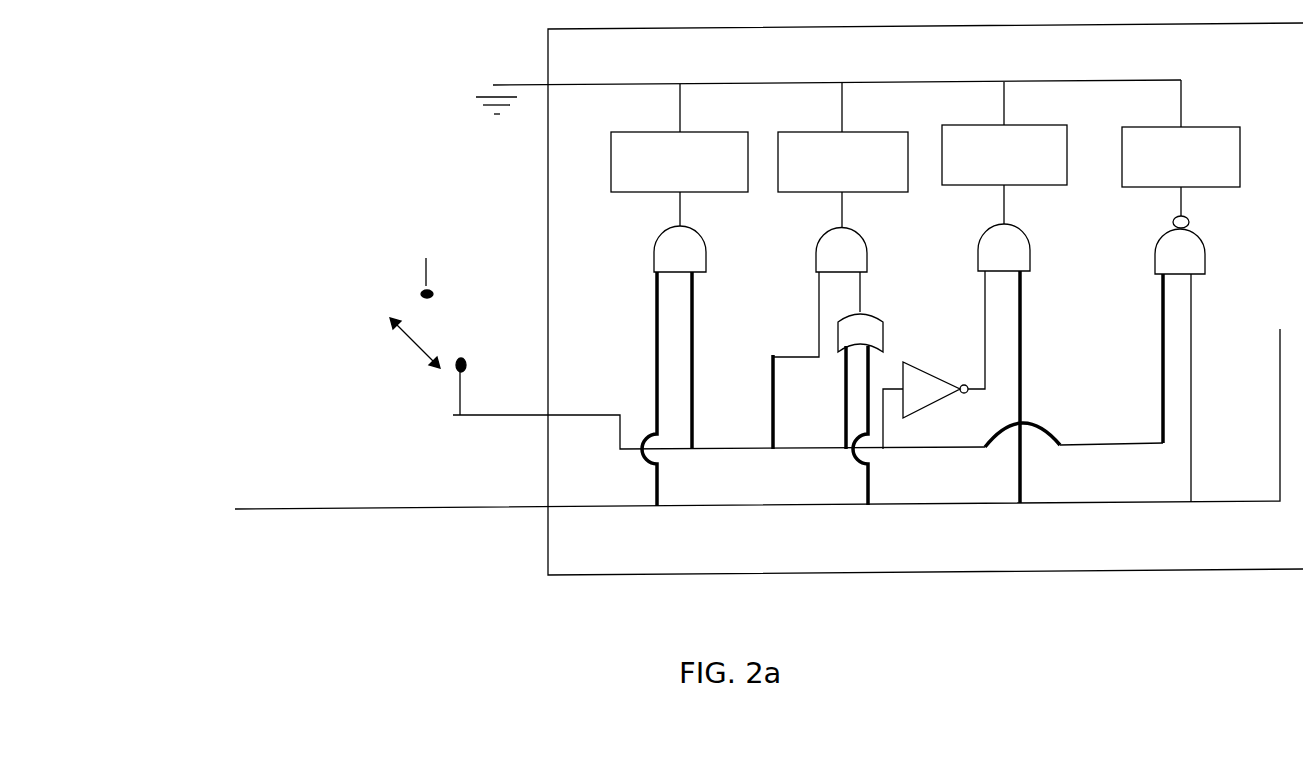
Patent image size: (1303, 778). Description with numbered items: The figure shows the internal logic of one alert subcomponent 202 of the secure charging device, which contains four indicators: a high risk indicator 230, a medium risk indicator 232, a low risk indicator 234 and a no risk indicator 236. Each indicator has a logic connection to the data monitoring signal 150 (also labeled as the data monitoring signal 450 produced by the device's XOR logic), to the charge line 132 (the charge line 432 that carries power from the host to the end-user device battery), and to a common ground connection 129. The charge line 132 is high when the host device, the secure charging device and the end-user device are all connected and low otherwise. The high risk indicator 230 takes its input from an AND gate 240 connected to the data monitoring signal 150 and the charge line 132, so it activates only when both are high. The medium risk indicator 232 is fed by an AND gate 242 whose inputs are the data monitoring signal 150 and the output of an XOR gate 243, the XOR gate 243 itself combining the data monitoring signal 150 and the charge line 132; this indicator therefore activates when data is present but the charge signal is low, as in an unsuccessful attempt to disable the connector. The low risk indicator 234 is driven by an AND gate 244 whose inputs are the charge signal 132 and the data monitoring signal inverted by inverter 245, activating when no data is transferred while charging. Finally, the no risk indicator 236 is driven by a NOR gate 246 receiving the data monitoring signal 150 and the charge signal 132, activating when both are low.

The common ground connection 129 is at (470, 108).
The data monitoring signal 150 is at (428, 283).
The data monitoring signal 450 is at (366, 214).
The charge line 132 is at (291, 509).
The charge line 432 is at (218, 466).
The alert subcomponent 202 is at (968, 575).
The high risk indicator 230 is at (658, 134).
The medium risk indicator 232 is at (817, 134).
The low risk indicator 234 is at (994, 132).
The no risk indicator 236 is at (1167, 132).
The AND gate 240 is at (706, 254).
The AND gate 242 is at (867, 254).
The XOR gate 243 is at (884, 333).
The AND gate 244 is at (1030, 252).
The inverter 245 is at (933, 405).
The NOR gate 246 is at (1205, 254).